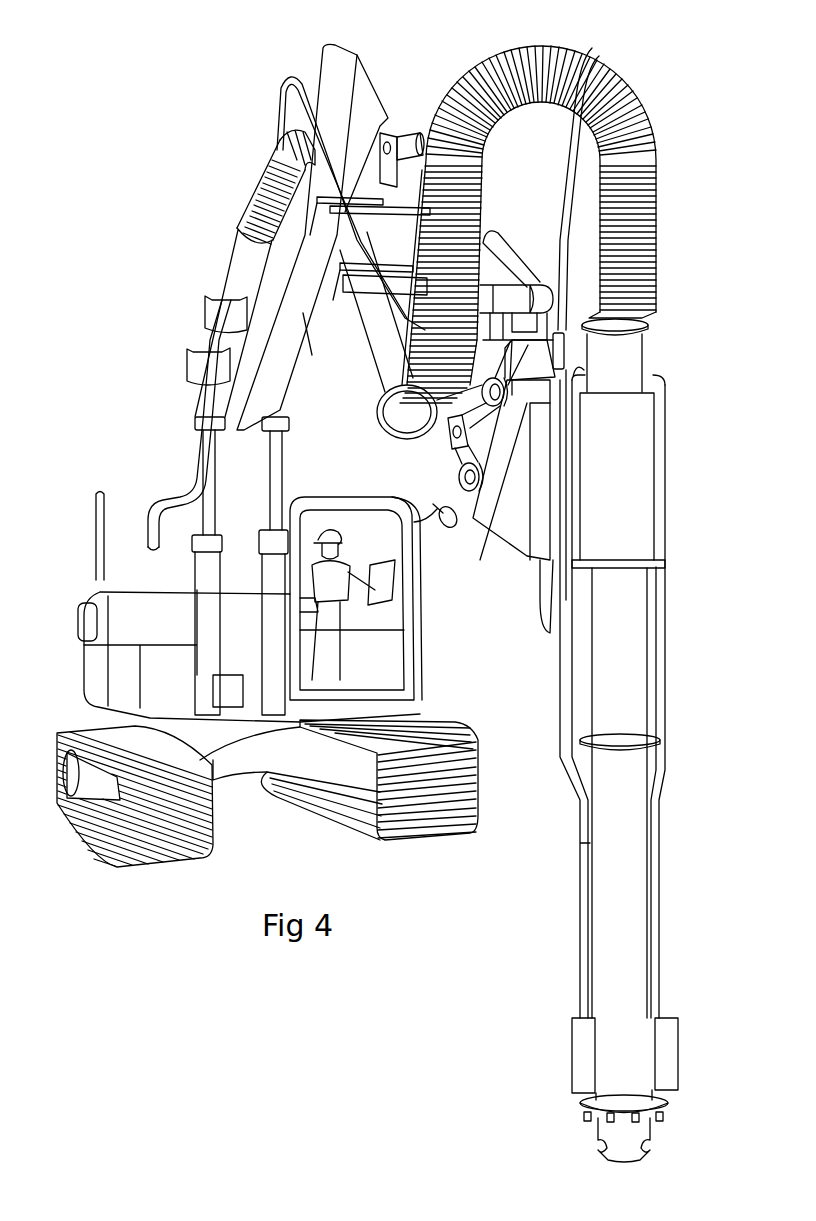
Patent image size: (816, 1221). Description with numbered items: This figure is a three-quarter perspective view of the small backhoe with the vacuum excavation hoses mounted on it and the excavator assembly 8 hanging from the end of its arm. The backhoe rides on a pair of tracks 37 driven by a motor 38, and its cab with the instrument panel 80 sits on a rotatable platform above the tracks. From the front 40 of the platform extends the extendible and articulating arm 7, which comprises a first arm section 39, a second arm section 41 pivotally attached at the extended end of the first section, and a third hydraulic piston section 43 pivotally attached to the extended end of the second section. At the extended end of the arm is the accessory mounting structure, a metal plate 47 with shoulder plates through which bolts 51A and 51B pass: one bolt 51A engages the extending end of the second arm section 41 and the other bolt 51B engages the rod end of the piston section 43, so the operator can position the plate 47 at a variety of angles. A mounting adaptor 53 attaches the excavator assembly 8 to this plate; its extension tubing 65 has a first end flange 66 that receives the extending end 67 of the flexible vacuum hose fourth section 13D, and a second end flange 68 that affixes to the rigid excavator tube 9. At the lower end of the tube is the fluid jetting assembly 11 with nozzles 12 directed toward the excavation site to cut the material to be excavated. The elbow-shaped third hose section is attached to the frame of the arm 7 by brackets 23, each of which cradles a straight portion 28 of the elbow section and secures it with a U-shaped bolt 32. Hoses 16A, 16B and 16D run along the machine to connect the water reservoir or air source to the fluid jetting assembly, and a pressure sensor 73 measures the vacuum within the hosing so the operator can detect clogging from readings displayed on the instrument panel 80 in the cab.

The extendible and articulating arm 7 is at (293, 396).
The excavator assembly 8 is at (687, 484).
The excavator tube 9 is at (653, 957).
The fluid jetting assembly 11 is at (580, 1111).
The nozzles 12 is at (613, 1123).
The flexible vacuum hose fourth section 13D is at (655, 218).
The hose/piping 16A is at (290, 85).
The hose/piping 16B is at (560, 700).
The hose/piping 16D is at (667, 705).
The bracket 23 is at (282, 157).
The straight portion 28 is at (233, 253).
The U-shaped bolt 32 is at (208, 316).
The tracks 37 is at (150, 867).
The motor 38 is at (82, 587).
The first arm section 39 is at (312, 355).
The front of the backhoe platform 40 is at (235, 767).
The second arm section 41 is at (380, 130).
The third hydraulic piston section 43 is at (448, 466).
The metal plate 47 is at (513, 580).
The bolt 51A is at (482, 390).
The bolt 51B is at (458, 479).
The mounting adaptor 53 is at (550, 633).
The extension tubing 65 is at (645, 357).
The first end flange 66 is at (655, 325).
The extending end 67 is at (645, 315).
The second end flange 68 is at (670, 565).
The pressure sensor 73 is at (148, 530).
The instrument panel 80 is at (420, 673).